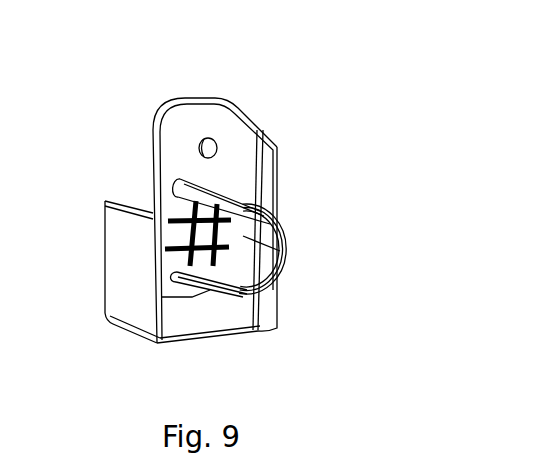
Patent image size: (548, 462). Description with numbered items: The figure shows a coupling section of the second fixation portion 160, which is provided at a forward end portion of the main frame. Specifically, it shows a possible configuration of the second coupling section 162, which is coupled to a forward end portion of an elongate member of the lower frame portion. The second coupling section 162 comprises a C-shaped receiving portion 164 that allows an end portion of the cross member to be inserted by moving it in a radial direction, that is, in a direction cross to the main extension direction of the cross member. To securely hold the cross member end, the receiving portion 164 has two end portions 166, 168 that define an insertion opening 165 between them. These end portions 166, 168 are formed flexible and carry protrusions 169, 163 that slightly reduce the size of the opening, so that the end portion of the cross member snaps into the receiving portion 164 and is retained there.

The second fixation portion 160 is at (282, 84).
The second coupling section 162 is at (200, 87).
The protrusion 163 is at (241, 276).
The C-shaped receiving portion 164 is at (285, 200).
The insertion opening 165 is at (168, 262).
The end portion 166 is at (238, 184).
The end portion 168 is at (225, 312).
The protrusion 169 is at (243, 241).